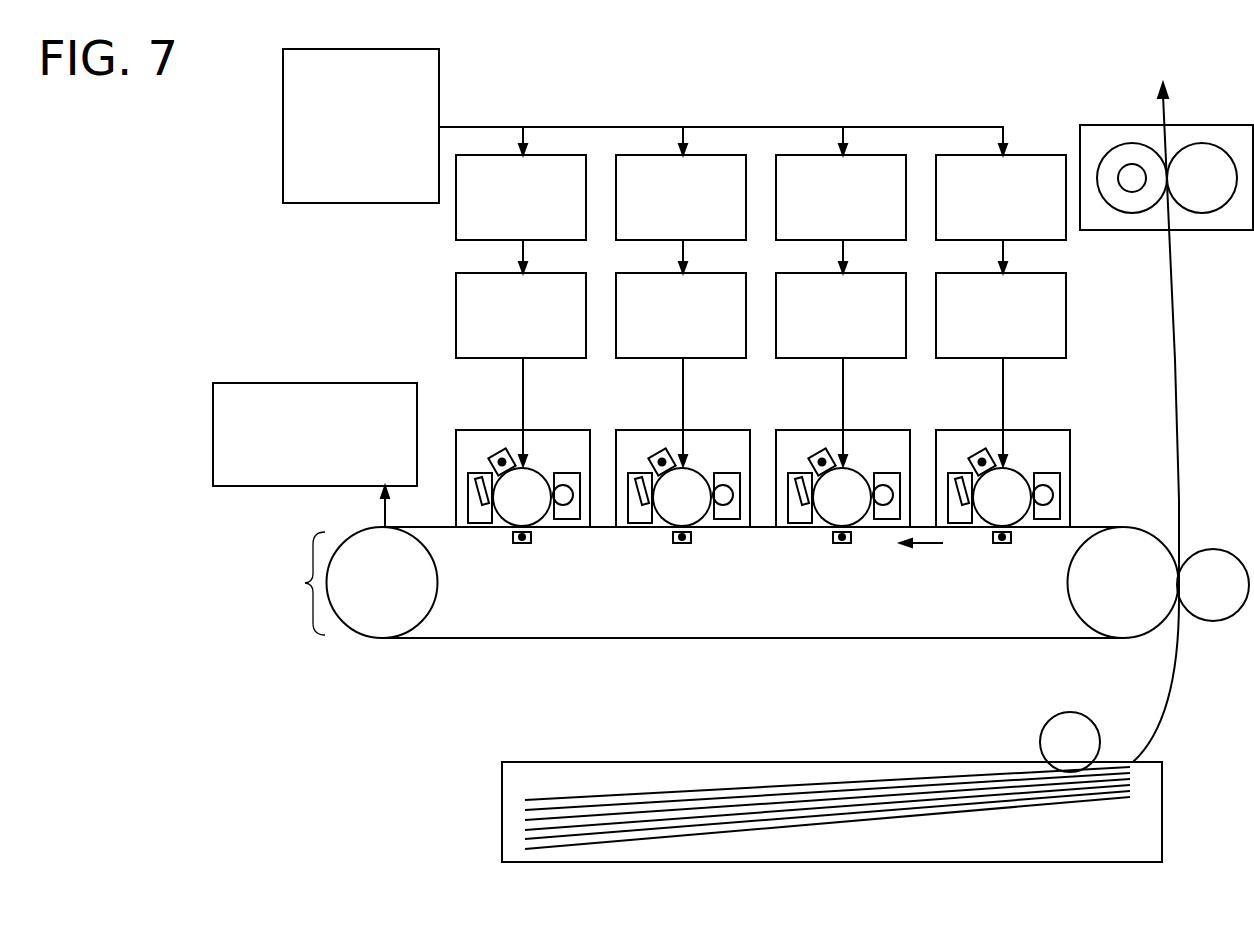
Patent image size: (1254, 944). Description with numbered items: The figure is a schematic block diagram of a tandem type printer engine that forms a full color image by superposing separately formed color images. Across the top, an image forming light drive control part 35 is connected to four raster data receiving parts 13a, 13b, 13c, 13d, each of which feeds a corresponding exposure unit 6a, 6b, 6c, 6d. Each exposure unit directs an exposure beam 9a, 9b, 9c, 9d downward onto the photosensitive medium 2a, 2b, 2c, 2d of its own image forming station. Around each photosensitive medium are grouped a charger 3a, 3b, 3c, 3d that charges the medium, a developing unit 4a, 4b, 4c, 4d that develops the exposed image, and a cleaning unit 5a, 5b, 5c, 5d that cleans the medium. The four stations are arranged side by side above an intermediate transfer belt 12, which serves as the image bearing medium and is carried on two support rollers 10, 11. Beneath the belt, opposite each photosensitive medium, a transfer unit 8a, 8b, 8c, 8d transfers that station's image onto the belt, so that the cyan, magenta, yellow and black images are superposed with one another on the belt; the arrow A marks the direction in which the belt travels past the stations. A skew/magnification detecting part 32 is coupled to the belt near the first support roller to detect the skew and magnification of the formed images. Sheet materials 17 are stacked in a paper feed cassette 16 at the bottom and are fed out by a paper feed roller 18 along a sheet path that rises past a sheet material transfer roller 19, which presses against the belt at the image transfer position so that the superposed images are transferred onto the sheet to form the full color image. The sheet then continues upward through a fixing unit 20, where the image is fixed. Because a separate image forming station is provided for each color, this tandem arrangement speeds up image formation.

The image forming light drive control part 35 is at (283, 78).
The raster data receiving part 13a is at (557, 155).
The raster data receiving part 13b is at (717, 155).
The raster data receiving part 13c is at (877, 155).
The raster data receiving part 13d is at (1037, 155).
The exposure unit 6a is at (456, 290).
The exposure unit 6b is at (616, 290).
The exposure unit 6c is at (776, 290).
The exposure unit 6d is at (936, 290).
The exposure beam 9a is at (523, 378).
The exposure beam 9b is at (683, 378).
The exposure beam 9c is at (843, 378).
The exposure beam 9d is at (1003, 378).
The photosensitive medium 2a is at (510, 513).
The photosensitive medium 2b is at (670, 513).
The photosensitive medium 2c is at (830, 513).
The photosensitive medium 2d is at (990, 513).
The charger 3a is at (502, 450).
The charger 3b is at (662, 450).
The charger 3c is at (822, 450).
The charger 3d is at (982, 450).
The cleaning unit 5a is at (463, 470).
The cleaning unit 5b is at (623, 470).
The cleaning unit 5c is at (783, 470).
The cleaning unit 5d is at (943, 470).
The developing unit 4a is at (568, 519).
The developing unit 4b is at (728, 519).
The developing unit 4c is at (888, 519).
The developing unit 4d is at (1048, 519).
The transfer unit 8a is at (522, 545).
The transfer unit 8b is at (682, 545).
The transfer unit 8c is at (842, 545).
The transfer unit 8d is at (1002, 545).
The skew/magnification detecting part 32 is at (213, 410).
The support roller 10 is at (362, 626).
The support roller 11 is at (1128, 626).
The intermediate transfer belt 12 is at (575, 640).
The sheet material transfer roller 19 is at (1215, 615).
The fixing unit 20 is at (1224, 125).
The paper feed roller 18 is at (1047, 724).
The paper feed cassette 16 is at (502, 782).
The sheet material 17 is at (798, 762).
The belt moving direction A is at (921, 556).